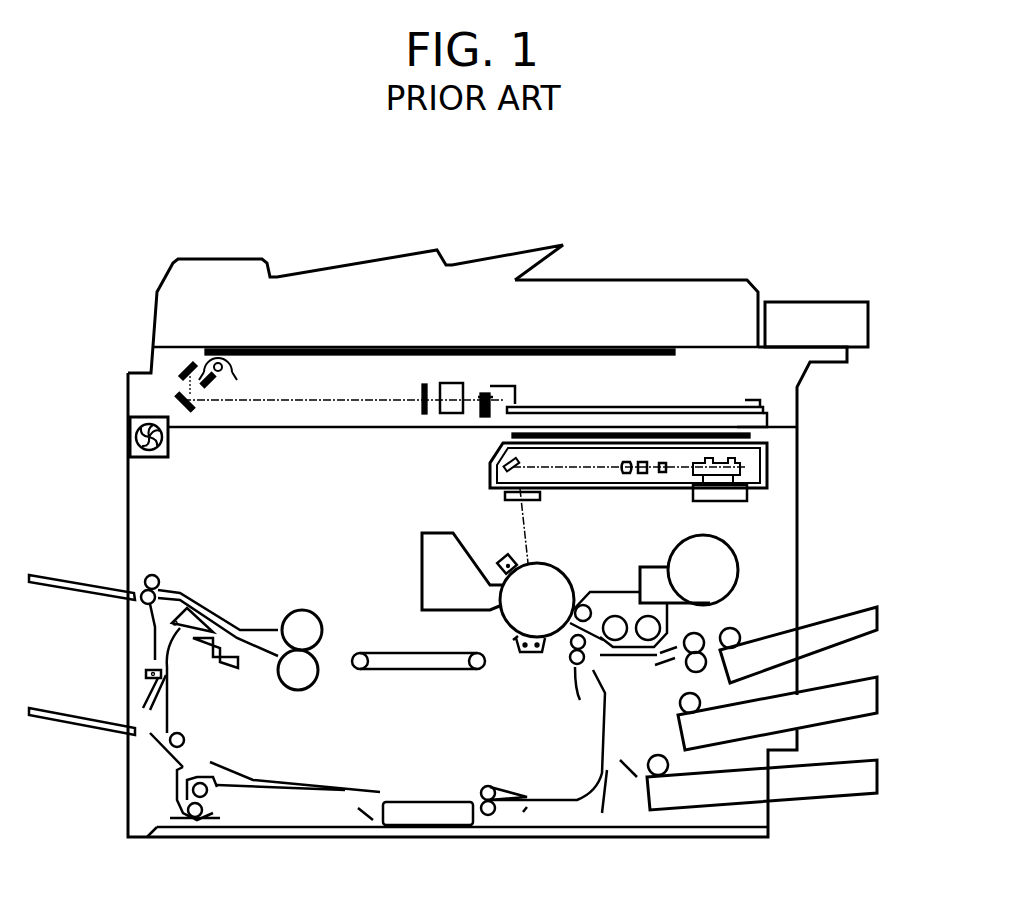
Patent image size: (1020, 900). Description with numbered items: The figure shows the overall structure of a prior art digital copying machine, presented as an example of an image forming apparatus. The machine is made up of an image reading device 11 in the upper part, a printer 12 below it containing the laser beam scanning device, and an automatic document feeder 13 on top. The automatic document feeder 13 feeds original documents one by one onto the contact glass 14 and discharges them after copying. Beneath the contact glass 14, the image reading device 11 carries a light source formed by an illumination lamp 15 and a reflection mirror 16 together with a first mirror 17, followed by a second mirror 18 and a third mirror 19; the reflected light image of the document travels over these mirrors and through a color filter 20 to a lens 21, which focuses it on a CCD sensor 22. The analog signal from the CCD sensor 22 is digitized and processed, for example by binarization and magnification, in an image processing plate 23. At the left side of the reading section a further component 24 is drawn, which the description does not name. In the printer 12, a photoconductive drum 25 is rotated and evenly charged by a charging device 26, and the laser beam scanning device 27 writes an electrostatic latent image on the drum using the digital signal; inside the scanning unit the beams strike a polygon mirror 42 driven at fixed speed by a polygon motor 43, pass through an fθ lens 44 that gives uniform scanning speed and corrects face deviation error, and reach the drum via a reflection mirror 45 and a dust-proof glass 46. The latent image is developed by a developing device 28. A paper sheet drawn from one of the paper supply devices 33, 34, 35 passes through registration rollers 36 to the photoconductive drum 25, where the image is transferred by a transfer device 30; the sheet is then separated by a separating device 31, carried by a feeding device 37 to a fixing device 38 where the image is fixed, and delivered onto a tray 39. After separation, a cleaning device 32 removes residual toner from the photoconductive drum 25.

The image reading device 11 is at (138, 383).
The printer 12 is at (783, 530).
The automatic document feeder 13 is at (655, 280).
The contact glass 14 is at (357, 349).
The illumination lamp 15 is at (221, 362).
The reflection mirror 16 is at (222, 375).
The first mirror 17 is at (210, 386).
The second mirror 18 is at (185, 366).
The third mirror 19 is at (180, 402).
The color filter 20 is at (423, 394).
The lens 21 is at (460, 383).
The CCD sensor 22 is at (478, 397).
The image processing plate 23 is at (607, 407).
The cooling fan 24 is at (167, 440).
The photoconductive drum 25 is at (503, 615).
The charging device 26 is at (500, 555).
The laser beam scanning device 27 is at (645, 490).
The developing device 28 is at (668, 616).
The transfer device 30 is at (535, 653).
The separating device 31 is at (518, 642).
The cleaning device 32 is at (421, 581).
The paper supply device 33 is at (860, 607).
The paper supply device 34 is at (870, 677).
The paper supply device 35 is at (868, 760).
The registration rollers 36 is at (575, 667).
The feeding device 37 is at (400, 672).
The fixing device 38 is at (300, 690).
The tray 39 is at (75, 592).
The polygon mirror 42 is at (760, 473).
The polygon motor 43 is at (737, 503).
The fθ lens 44 is at (626, 472).
The reflection mirror 45 is at (500, 462).
The dust-proof glass 46 is at (522, 502).